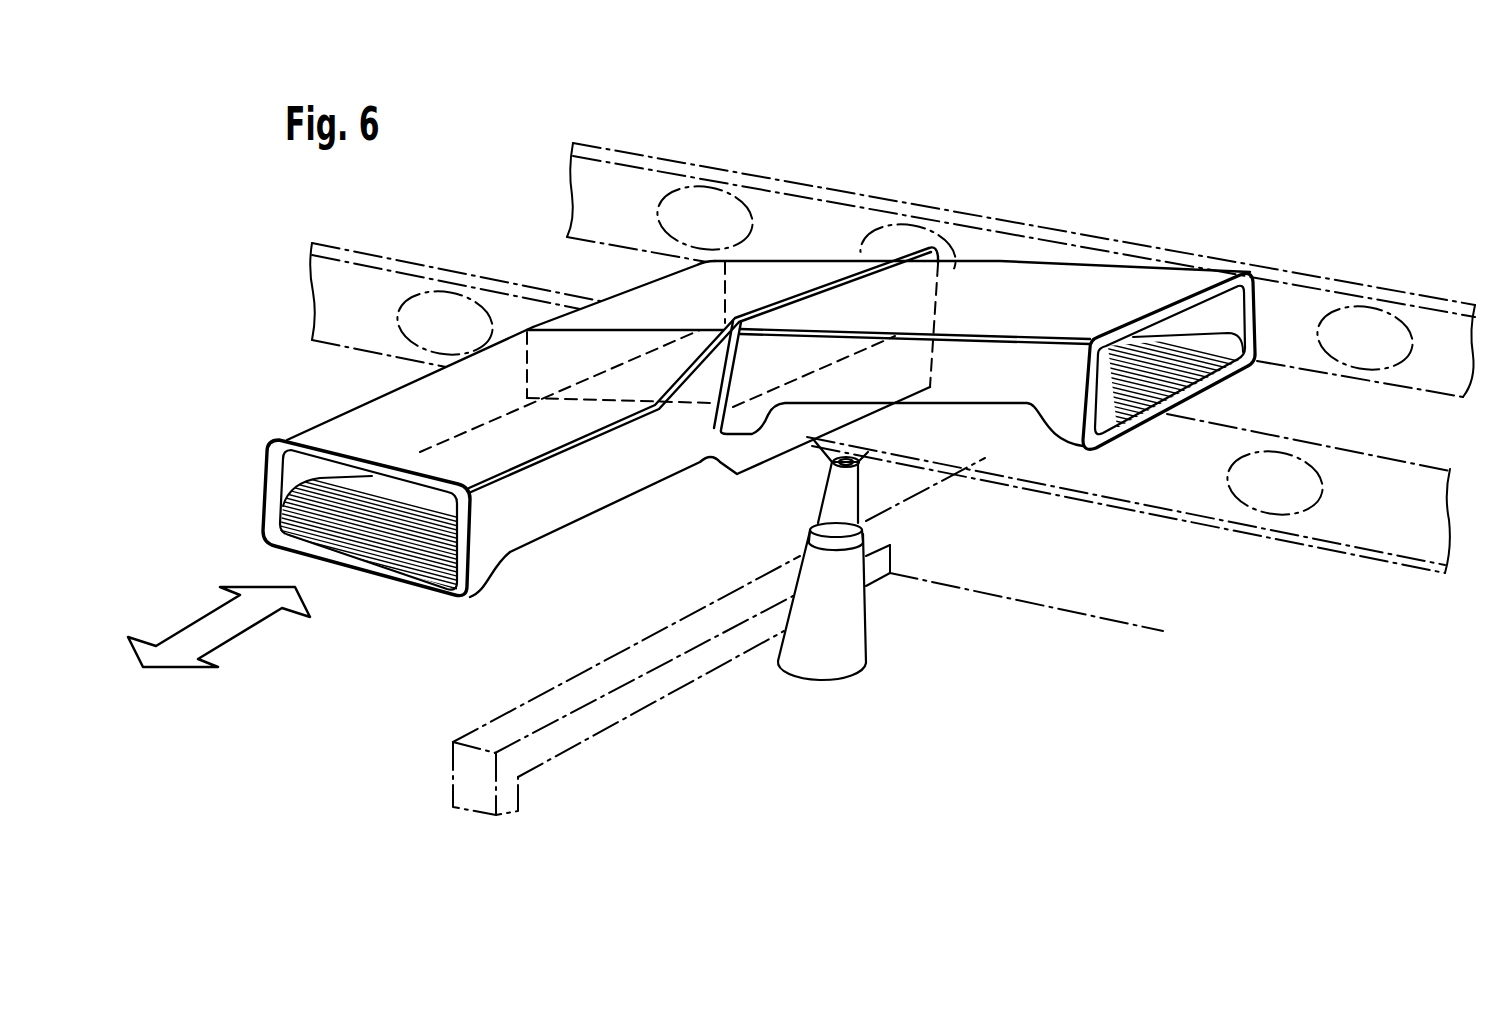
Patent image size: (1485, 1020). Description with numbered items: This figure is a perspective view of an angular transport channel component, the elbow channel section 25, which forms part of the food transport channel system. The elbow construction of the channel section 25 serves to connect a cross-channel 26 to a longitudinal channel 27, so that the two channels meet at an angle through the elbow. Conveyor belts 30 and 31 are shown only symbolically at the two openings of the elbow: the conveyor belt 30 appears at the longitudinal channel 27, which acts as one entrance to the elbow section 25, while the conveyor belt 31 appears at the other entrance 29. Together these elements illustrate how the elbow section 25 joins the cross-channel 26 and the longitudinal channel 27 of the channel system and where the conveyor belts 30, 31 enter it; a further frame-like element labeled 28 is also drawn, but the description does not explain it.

The channel section 25 is at (972, 200).
The cross-channel 26 is at (1060, 273).
The longitudinal channel 27 is at (337, 438).
The end frame of lower housing section 28 is at (272, 485).
The entrance 29 is at (1247, 307).
The conveyor belt 30 is at (413, 560).
The conveyor belt 31 is at (1210, 357).